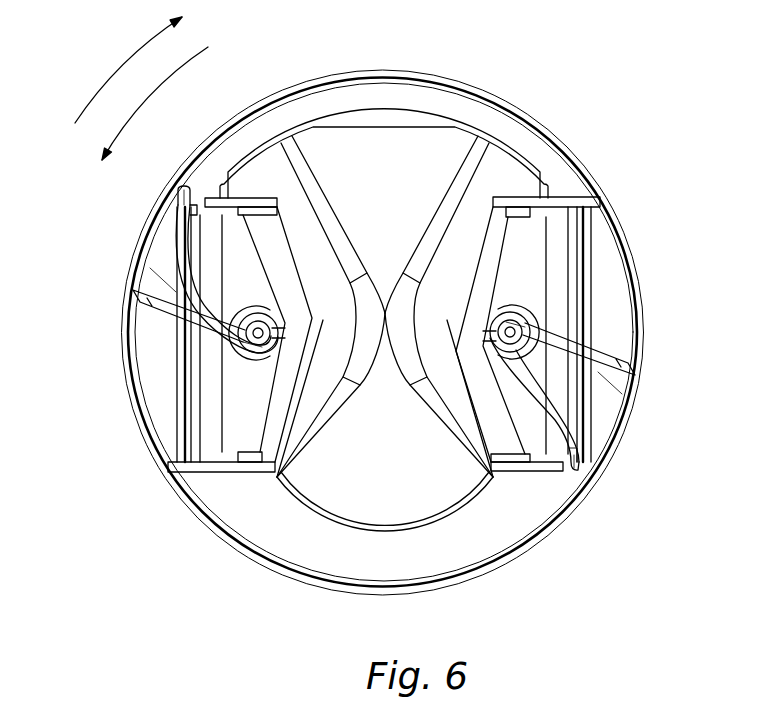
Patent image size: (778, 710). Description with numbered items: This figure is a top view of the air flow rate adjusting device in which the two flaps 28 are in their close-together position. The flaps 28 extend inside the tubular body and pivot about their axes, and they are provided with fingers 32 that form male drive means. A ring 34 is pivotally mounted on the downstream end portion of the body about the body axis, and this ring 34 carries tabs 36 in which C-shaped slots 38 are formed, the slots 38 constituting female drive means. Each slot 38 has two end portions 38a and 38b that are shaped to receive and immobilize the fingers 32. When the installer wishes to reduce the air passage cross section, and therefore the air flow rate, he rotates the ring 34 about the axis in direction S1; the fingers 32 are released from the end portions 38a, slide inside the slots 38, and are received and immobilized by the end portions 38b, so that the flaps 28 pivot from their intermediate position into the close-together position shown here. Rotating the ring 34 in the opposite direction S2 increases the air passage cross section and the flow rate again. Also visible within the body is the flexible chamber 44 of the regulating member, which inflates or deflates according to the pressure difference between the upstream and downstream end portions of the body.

The flaps 28 is at (282, 198).
The fingers 32 is at (245, 340).
The ring 34 is at (543, 125).
The tabs 36 is at (162, 282).
The C-shaped slots 38 is at (210, 297).
The end portion 38a is at (185, 198).
The end portion 38b is at (240, 342).
The flexible chamber 44 is at (455, 148).
The direction S1 is at (177, 72).
The direction S2 is at (102, 88).